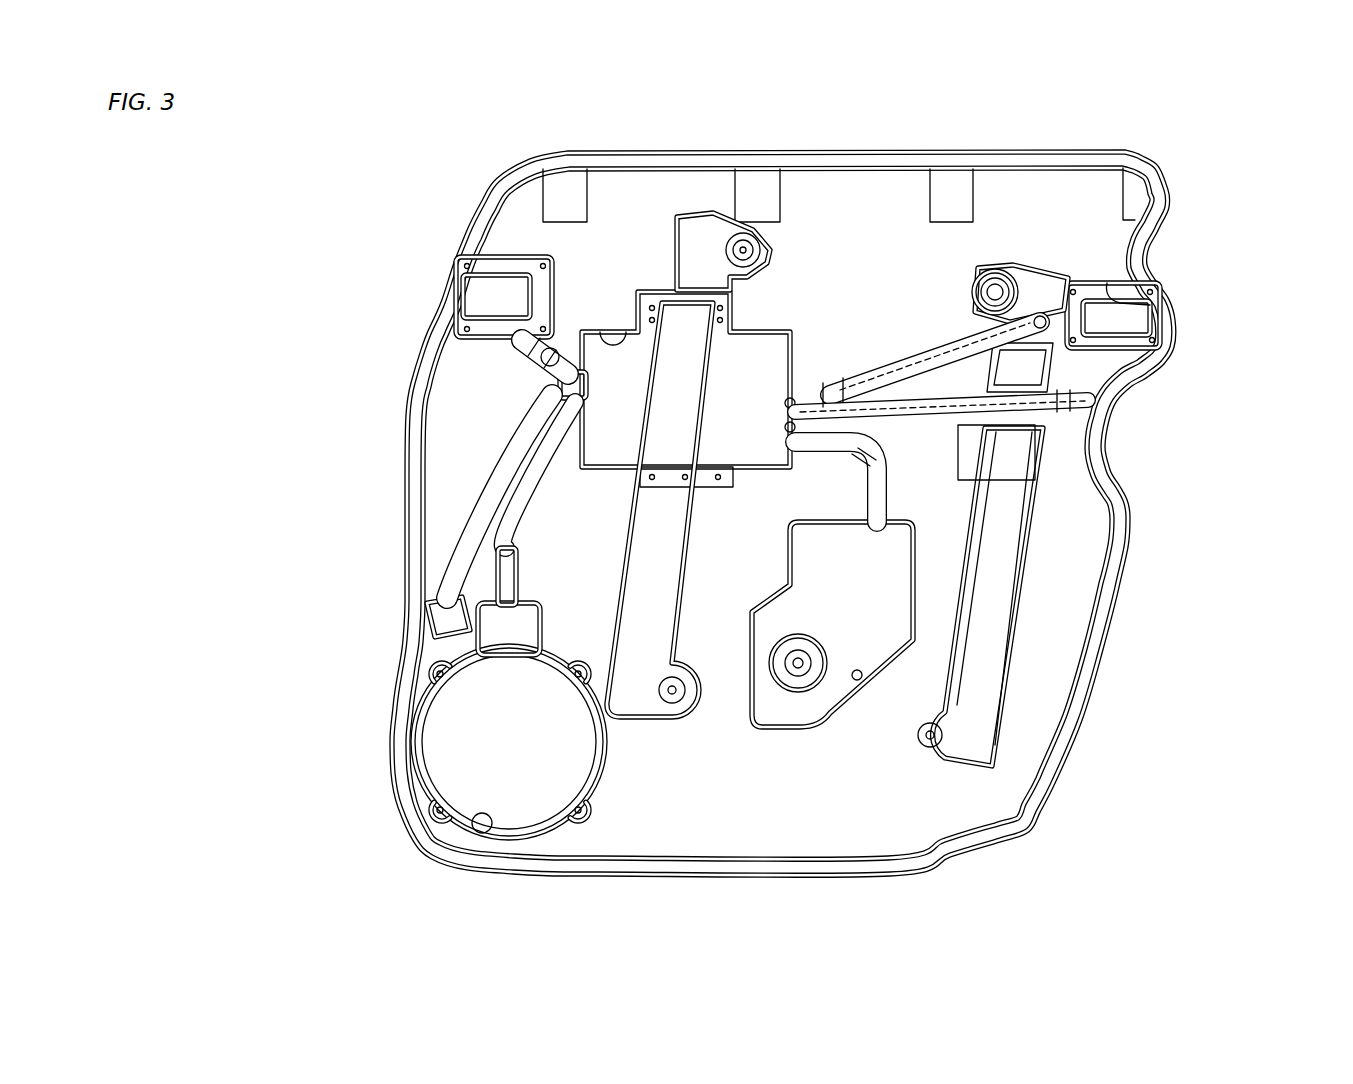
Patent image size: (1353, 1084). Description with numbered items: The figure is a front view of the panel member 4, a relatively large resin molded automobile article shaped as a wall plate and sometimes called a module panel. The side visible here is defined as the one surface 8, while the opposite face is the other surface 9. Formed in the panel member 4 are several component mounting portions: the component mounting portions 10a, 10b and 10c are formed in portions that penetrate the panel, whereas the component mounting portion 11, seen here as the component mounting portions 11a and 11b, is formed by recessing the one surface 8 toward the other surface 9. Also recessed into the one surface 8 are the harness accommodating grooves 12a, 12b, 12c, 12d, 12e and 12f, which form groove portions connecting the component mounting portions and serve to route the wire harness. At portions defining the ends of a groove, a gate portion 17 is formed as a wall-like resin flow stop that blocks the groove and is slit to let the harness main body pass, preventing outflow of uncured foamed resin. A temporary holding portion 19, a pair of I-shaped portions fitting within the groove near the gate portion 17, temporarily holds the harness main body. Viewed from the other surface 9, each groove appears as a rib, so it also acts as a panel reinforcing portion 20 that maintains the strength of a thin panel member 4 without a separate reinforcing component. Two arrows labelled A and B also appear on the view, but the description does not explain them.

The panel member 4 is at (743, 492).
The one surface 8 is at (1010, 824).
The other surface 9 is at (1008, 774).
The component mounting portion 10a is at (470, 324).
The component mounting portion 10b is at (478, 838).
The component mounting portion 10c is at (1172, 316).
The component mounting portion 11 is at (832, 624).
The component mounting portion 11a is at (627, 337).
The component mounting portion 11b is at (893, 610).
The harness accommodating groove 12a is at (525, 352).
The harness accommodating groove 12b is at (500, 478).
The harness accommodating groove 12c is at (520, 500).
The harness accommodating groove 12d is at (925, 350).
The harness accommodating groove 12e is at (960, 430).
The harness accommodating groove 12f is at (880, 497).
The gate portion 17 is at (570, 380).
The temporary holding portion 19 is at (822, 385).
The panel reinforcing portion 20 is at (1013, 263).
The direction A is at (878, 338).
The direction B is at (690, 430).